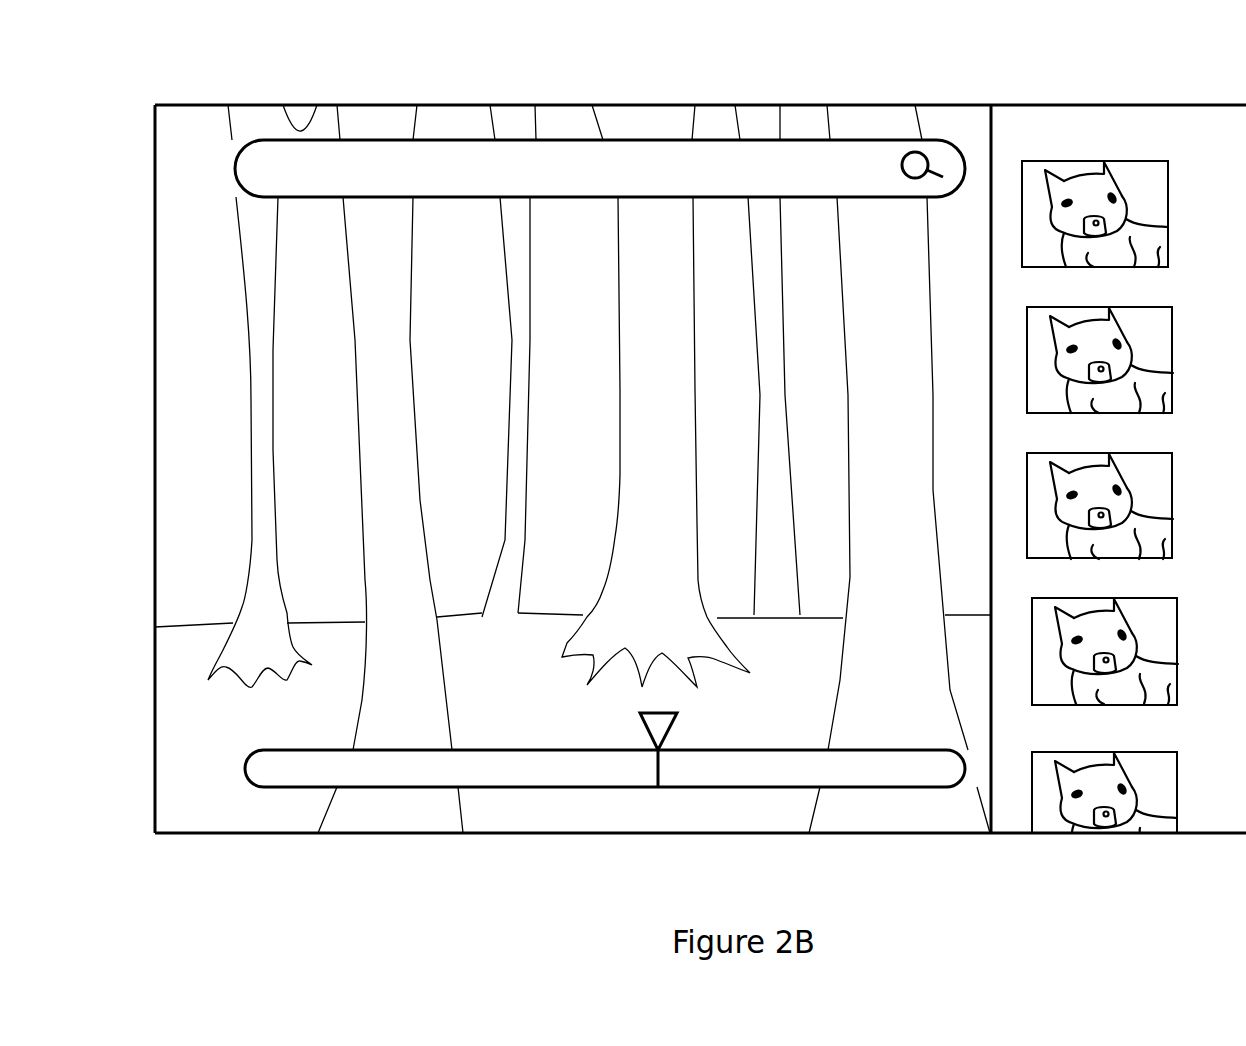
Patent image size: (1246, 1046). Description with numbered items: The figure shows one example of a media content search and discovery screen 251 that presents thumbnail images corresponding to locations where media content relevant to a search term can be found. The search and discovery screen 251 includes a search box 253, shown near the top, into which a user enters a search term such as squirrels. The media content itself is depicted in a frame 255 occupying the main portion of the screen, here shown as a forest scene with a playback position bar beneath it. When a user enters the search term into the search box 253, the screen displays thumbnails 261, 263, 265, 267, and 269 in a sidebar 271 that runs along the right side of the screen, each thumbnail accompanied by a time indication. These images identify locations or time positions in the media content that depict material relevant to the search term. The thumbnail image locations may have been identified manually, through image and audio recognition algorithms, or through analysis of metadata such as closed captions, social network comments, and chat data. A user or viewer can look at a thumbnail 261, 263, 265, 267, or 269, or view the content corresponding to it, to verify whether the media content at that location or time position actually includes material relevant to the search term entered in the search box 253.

The search and discovery screen 251 is at (153, 193).
The search box 253 is at (862, 160).
The frame 255 is at (175, 668).
The sidebar 271 is at (1118, 448).
The thumbnail 261 is at (1129, 214).
The thumbnail 263 is at (1136, 360).
The thumbnail 265 is at (1136, 506).
The thumbnail 267 is at (1139, 651).
The thumbnail 269 is at (1139, 805).